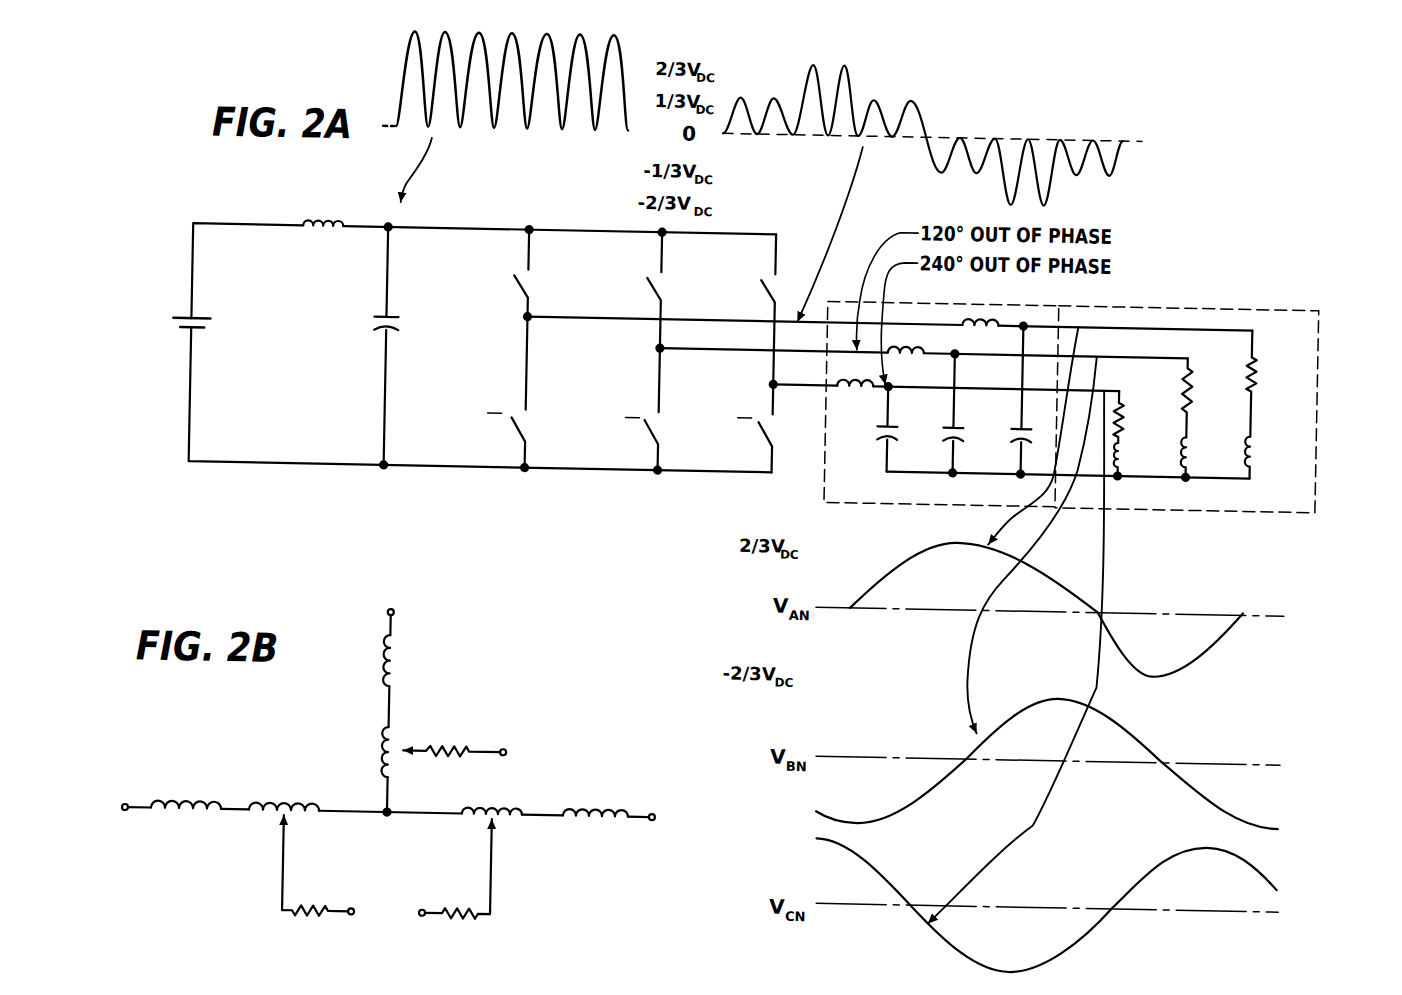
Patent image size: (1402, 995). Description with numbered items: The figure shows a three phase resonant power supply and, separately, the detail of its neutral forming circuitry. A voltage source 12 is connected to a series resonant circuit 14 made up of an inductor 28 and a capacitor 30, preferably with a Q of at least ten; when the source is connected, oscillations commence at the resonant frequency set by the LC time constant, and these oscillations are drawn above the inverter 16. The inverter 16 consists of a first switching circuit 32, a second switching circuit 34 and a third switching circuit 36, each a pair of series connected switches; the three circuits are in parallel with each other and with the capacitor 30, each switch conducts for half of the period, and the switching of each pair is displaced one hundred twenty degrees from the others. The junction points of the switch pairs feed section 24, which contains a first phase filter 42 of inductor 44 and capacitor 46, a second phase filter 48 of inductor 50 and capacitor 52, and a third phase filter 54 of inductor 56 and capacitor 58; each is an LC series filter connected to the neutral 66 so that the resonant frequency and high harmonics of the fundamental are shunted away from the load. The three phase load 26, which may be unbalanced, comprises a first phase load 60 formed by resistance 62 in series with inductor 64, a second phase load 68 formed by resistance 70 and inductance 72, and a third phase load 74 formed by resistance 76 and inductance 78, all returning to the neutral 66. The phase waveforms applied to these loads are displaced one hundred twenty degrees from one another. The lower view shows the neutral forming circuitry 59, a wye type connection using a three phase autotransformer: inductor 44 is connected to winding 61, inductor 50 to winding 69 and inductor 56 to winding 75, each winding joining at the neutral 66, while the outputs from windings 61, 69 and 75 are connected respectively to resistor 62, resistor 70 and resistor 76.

In FIG. 2A, the voltage source 12 is at (186, 332).
In FIG. 2A, the series resonant circuit 14 is at (460, 324).
In FIG. 2A, the inverter 16 is at (634, 309).
In FIG. 2A, the section 24 is at (940, 405).
In FIG. 2A, the three phase load 26 is at (1122, 372).
In FIG. 2A, the inductor 28 is at (316, 232).
In FIG. 2A, the capacitor 30 is at (380, 336).
In FIG. 2A, the first switching circuit 32 is at (546, 355).
In FIG. 2A, the second switching circuit 34 is at (759, 364).
In FIG. 2A, the third switching circuit 36 is at (671, 360).
In FIG. 2A, the first phase filter 42 is at (1004, 374).
In FIG. 2A, the inductor 44 is at (977, 317).
In FIG. 2B, the inductor 44 is at (400, 670).
In FIG. 2A, the capacitor 46 is at (1026, 434).
In FIG. 2A, the second phase filter 48 is at (871, 425).
In FIG. 2A, the inductor 50 is at (842, 387).
In FIG. 2B, the inductor 50 is at (608, 812).
In FIG. 2A, the capacitor 52 is at (890, 424).
In FIG. 2A, the third phase filter 54 is at (932, 373).
In FIG. 2A, the inductor 56 is at (901, 341).
In FIG. 2B, the inductor 56 is at (193, 811).
In FIG. 2A, the capacitor 58 is at (963, 440).
In FIG. 2B, the neutral forming circuitry 59 is at (389, 787).
In FIG. 2A, the first phase load 60 is at (1122, 393).
In FIG. 2B, the autotransformer winding 61 is at (386, 755).
In FIG. 2A, the resistance 62 is at (1255, 354).
In FIG. 2B, the resistance 62 is at (460, 756).
In FIG. 2A, the inductor 64 is at (1259, 435).
In FIG. 2A, the neutral 66 is at (1233, 475).
In FIG. 2B, the neutral 66 is at (392, 822).
In FIG. 2A, the second phase load 68 is at (1135, 419).
In FIG. 2B, the autotransformer winding 69 is at (504, 812).
In FIG. 2A, the resistance 70 is at (1129, 374).
In FIG. 2B, the resistance 70 is at (476, 917).
In FIG. 2A, the inductance 72 is at (1124, 447).
In FIG. 2A, the third phase load 74 is at (1210, 376).
In FIG. 2B, the autotransformer winding 75 is at (296, 811).
In FIG. 2A, the resistance 76 is at (1193, 376).
In FIG. 2B, the resistance 76 is at (325, 917).
In FIG. 2A, the inductance 78 is at (1196, 436).